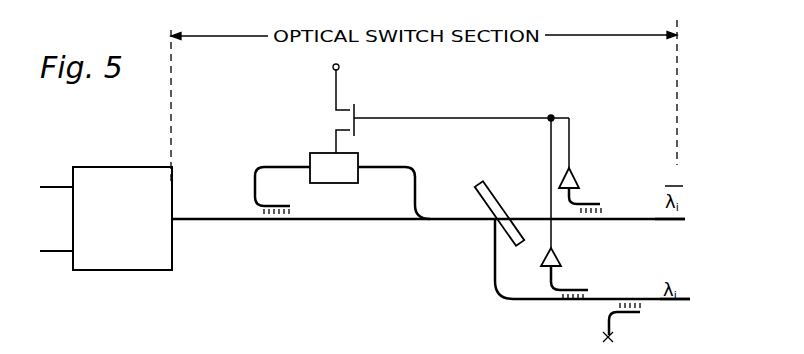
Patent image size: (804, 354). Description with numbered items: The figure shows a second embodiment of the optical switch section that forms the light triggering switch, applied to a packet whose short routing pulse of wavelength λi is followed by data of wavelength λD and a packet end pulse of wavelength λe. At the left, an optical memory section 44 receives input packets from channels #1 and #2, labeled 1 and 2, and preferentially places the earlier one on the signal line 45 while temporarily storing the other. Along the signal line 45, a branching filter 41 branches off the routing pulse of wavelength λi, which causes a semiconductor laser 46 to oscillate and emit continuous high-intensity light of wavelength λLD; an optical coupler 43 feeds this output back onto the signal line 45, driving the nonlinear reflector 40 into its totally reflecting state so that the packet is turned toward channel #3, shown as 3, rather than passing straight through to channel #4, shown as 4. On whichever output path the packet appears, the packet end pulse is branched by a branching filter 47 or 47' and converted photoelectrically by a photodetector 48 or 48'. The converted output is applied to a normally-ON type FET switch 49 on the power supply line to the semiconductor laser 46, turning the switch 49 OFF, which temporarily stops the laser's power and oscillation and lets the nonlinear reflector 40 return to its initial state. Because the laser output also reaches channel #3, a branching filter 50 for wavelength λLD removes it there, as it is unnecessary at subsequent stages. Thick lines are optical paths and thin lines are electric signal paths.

The channel # 1 is at (39, 188).
The channel # 2 is at (39, 254).
The channel # 3 is at (692, 303).
The channel # 4 is at (688, 213).
The nonlinear reflector 40 is at (489, 182).
The branching filter 41 is at (273, 222).
The optical coupler 43 is at (423, 222).
The optical memory section 44 is at (118, 166).
The signal line 45 is at (210, 221).
The semiconductor laser 46 is at (316, 153).
The branching filter 47 is at (569, 308).
The branching filter 47' is at (606, 219).
The photodetector 48 is at (532, 206).
The photodetector 48' is at (592, 153).
The normally-ON type FET switch 49 is at (360, 110).
The branching filter 50 is at (634, 296).